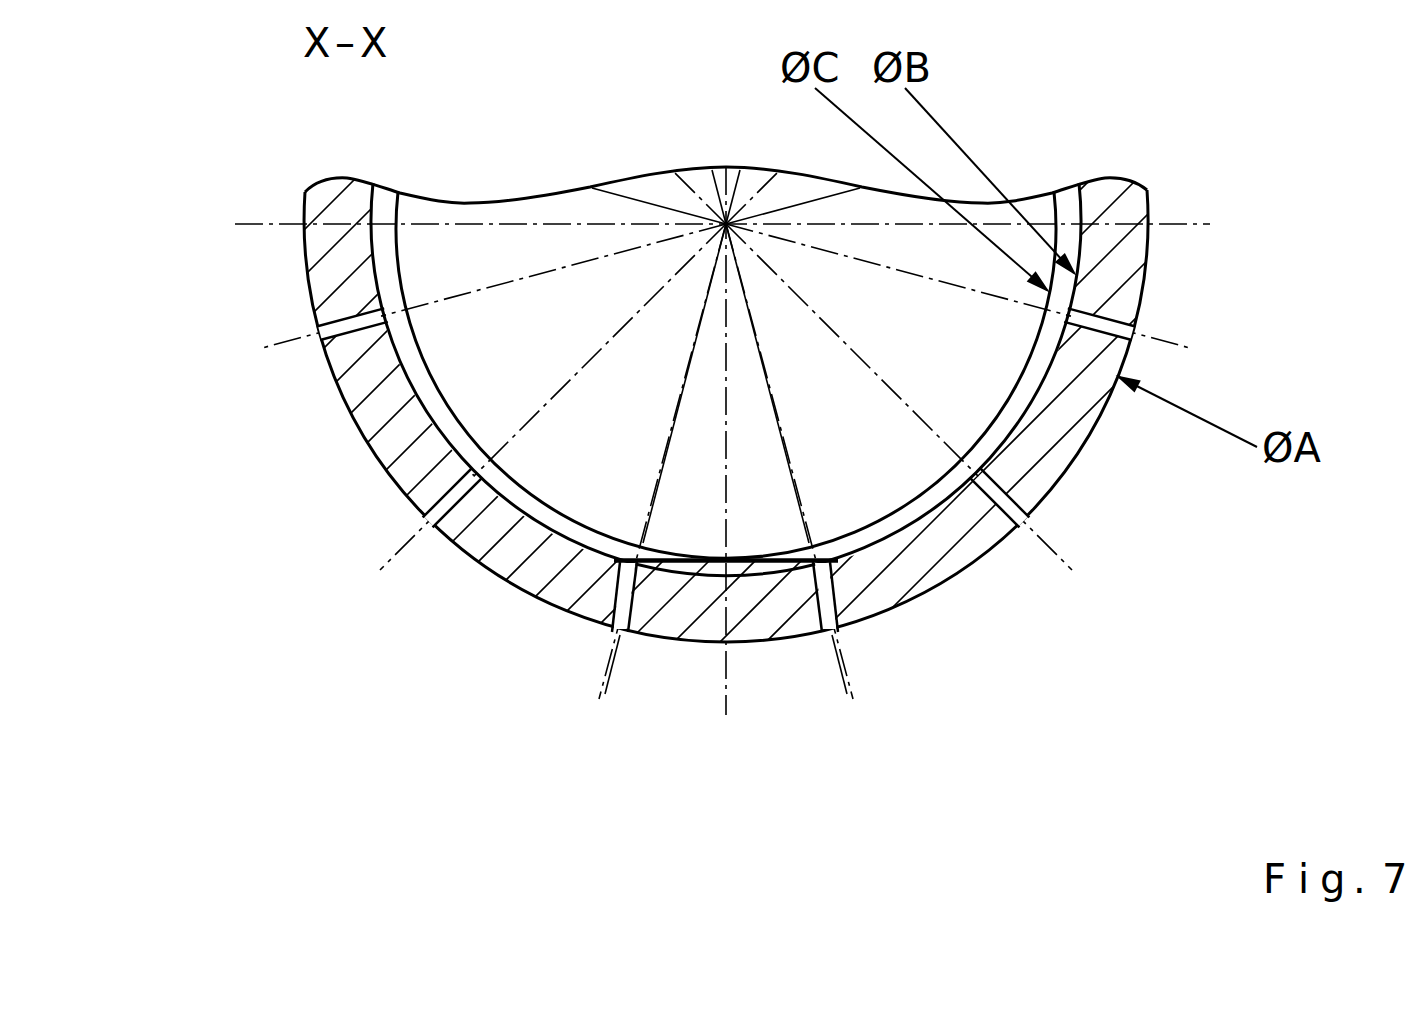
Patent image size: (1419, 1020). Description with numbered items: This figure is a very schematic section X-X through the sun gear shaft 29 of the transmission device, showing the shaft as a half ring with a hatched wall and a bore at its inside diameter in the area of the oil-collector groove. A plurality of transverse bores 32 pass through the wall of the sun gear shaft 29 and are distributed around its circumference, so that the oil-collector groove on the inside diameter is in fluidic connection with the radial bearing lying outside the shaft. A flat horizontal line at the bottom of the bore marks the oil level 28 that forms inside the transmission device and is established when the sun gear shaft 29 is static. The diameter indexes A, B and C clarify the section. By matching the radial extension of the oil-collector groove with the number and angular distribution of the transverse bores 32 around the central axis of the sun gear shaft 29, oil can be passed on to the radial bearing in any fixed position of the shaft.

The oil level 28 is at (792, 570).
The sun gear shaft 29 is at (930, 555).
The transverse bores 32 is at (363, 317).